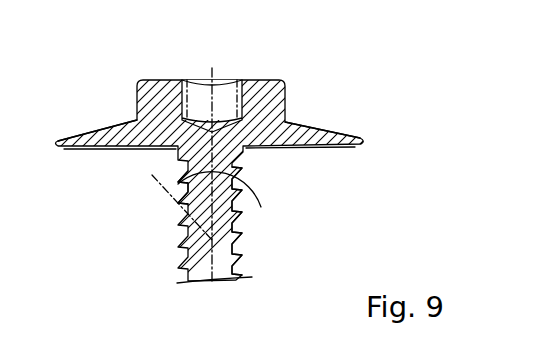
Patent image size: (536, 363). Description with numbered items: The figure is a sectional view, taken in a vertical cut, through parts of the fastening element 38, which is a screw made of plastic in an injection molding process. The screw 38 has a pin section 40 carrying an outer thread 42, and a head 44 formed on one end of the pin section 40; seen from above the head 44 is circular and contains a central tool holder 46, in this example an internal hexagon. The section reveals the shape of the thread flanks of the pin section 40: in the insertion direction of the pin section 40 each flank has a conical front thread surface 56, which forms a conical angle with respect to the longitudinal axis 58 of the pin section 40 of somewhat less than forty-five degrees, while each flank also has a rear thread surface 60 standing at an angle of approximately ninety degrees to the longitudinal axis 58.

The fastening element 38 is at (414, 156).
The pin section 40 is at (208, 276).
The outer thread 42 is at (250, 207).
The head 44 is at (322, 133).
The tool holder 46 is at (232, 88).
The front thread surface 56 is at (183, 206).
The longitudinal axis 58 is at (210, 73).
The rear thread surface 60 is at (233, 175).